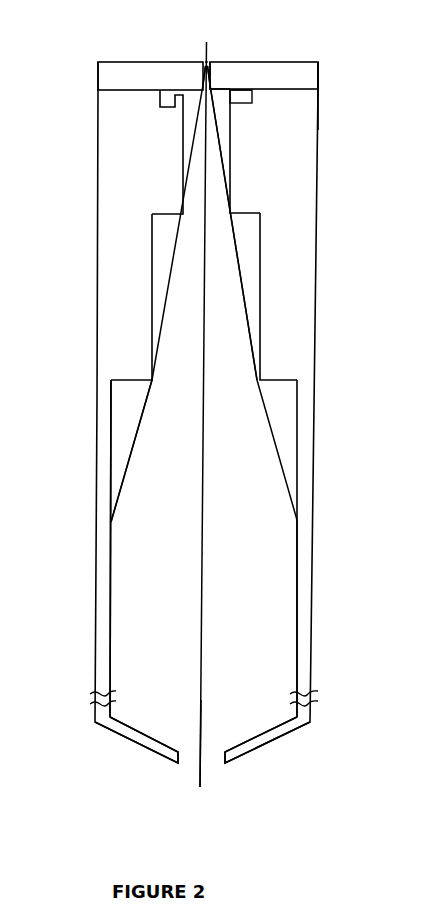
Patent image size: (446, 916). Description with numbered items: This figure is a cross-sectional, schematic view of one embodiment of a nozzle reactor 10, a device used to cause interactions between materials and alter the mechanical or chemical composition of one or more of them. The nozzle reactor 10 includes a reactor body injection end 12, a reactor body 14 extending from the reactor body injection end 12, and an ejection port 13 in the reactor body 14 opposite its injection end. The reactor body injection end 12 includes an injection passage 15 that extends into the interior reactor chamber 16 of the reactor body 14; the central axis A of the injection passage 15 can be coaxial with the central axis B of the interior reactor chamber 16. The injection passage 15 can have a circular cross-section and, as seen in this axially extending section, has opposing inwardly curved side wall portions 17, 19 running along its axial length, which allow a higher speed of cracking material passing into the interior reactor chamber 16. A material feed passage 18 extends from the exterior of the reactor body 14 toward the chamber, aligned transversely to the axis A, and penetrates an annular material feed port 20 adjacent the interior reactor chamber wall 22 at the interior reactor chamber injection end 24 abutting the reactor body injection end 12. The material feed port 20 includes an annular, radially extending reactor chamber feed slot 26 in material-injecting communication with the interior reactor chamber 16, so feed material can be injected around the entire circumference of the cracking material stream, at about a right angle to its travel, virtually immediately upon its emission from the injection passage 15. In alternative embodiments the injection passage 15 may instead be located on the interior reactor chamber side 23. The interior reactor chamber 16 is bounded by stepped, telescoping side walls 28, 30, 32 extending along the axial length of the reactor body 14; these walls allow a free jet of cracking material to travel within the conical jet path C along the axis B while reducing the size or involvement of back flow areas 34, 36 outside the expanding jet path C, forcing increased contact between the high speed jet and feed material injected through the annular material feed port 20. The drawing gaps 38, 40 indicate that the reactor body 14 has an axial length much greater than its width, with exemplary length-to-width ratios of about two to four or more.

The nozzle reactor 10 is at (345, 164).
The reactor body injection end 12 is at (243, 70).
The ejection port 13 is at (213, 765).
The reactor body 14 is at (316, 362).
The injection passage 15 is at (203, 78).
The interior reactor chamber 16 is at (252, 547).
The inwardly curved side wall portion 17 is at (202, 73).
The material feed passage 18 is at (115, 91).
The inwardly curved side wall portion 19 is at (218, 74).
The annular material feed port 20 is at (160, 108).
The interior reactor chamber wall 22 is at (232, 125).
The interior reactor chamber side 23 is at (318, 122).
The interior reactor chamber injection end 24 is at (253, 96).
The reactor chamber feed slot 26 is at (237, 91).
The stepped side wall 28 is at (185, 192).
The stepped side wall 30 is at (152, 280).
The stepped side wall 32 is at (110, 422).
The back flow area 34 is at (248, 250).
The back flow area 36 is at (122, 452).
The drawing gap 38 is at (93, 700).
The drawing gap 40 is at (318, 692).
The central axis of the injection passage A is at (200, 68).
The central axis of the interior reactor chamber B is at (202, 647).
The conical jet path C is at (248, 318).